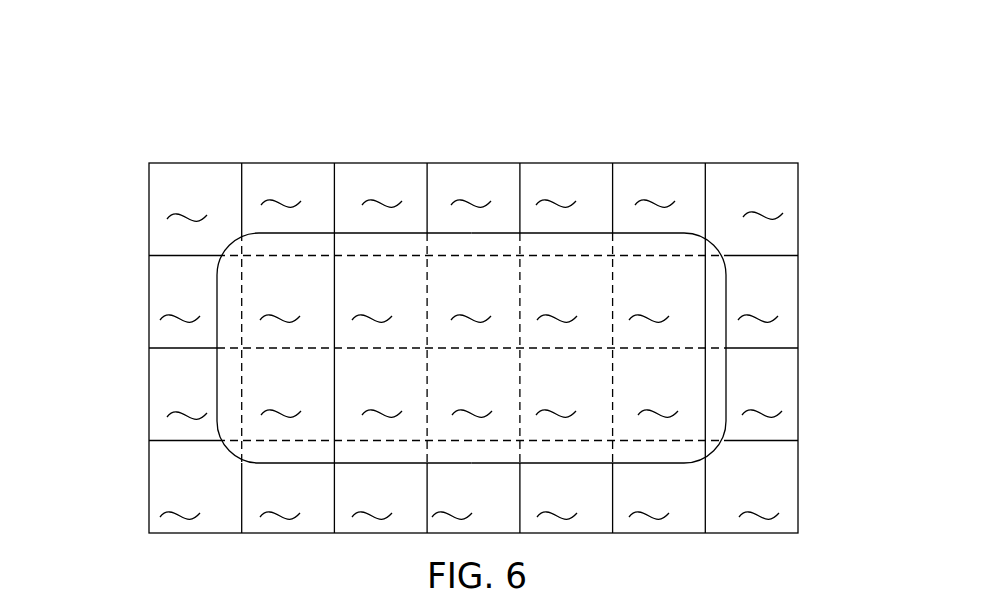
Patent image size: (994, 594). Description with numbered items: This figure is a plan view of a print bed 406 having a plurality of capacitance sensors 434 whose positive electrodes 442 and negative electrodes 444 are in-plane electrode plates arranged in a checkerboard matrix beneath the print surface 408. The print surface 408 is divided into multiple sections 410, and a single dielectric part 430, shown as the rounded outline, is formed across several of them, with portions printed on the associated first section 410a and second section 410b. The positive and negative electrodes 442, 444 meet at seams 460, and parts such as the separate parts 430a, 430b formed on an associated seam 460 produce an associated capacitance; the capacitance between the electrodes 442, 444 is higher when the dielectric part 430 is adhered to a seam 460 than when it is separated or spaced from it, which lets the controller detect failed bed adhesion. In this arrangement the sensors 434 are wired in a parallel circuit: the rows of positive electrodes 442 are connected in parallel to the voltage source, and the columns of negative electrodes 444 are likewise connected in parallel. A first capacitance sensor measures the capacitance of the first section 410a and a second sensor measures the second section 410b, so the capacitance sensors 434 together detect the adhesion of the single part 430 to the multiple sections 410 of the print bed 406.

The print bed 406 is at (490, 292).
The print surface 408 is at (490, 310).
The sections 410 is at (490, 310).
The first section 410a is at (423, 145).
The second section 410b is at (700, 145).
The dielectric part 430 is at (437, 287).
The separate part 430a is at (292, 265).
The separate part 430b is at (678, 278).
The capacitance sensors 434 is at (228, 268).
The positive electrodes 442 is at (475, 343).
The negative electrodes 444 is at (469, 343).
The seam 460 is at (812, 367).